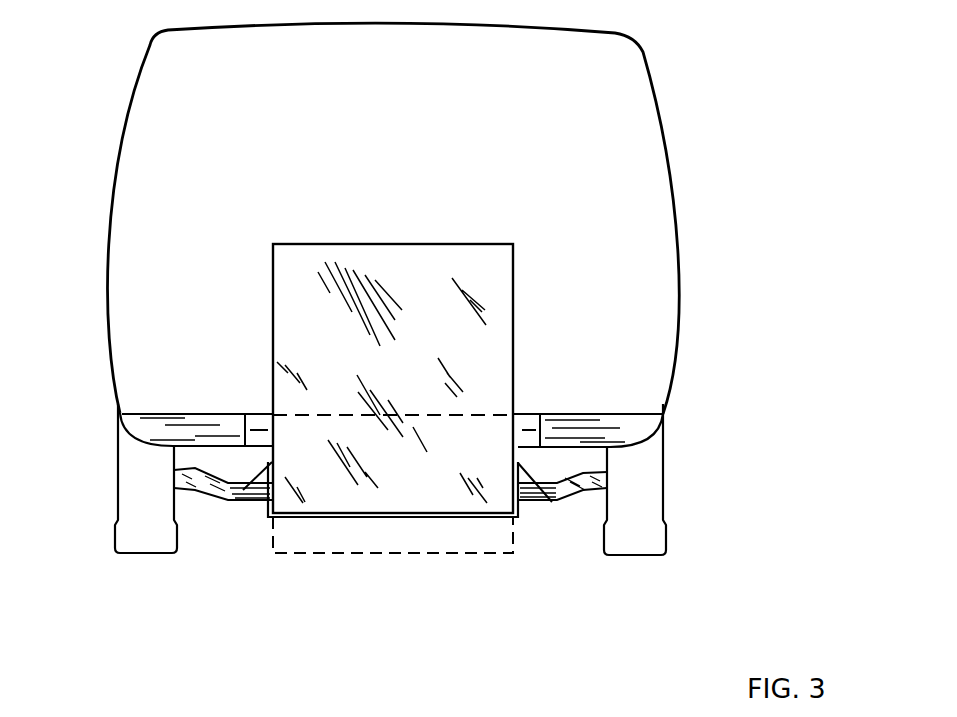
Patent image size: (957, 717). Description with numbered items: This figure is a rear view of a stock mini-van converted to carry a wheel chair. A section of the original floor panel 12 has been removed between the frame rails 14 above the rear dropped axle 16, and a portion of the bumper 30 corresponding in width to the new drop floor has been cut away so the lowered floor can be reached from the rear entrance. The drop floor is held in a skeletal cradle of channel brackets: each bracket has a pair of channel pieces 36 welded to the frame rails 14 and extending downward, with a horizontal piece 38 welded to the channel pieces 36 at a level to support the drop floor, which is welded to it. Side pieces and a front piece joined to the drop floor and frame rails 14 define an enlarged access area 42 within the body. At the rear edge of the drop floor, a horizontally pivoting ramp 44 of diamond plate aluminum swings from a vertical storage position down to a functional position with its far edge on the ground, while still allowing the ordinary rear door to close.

The floor panel 12 is at (167, 410).
The frame rails 14 is at (257, 423).
The rear dropped axle 16 is at (225, 492).
The bumper 30 is at (157, 432).
The channel pieces 36 is at (235, 502).
The horizontal piece 38 is at (373, 517).
The enlarged access area 42 is at (363, 453).
The horizontally pivoting ramp 44 is at (460, 268).